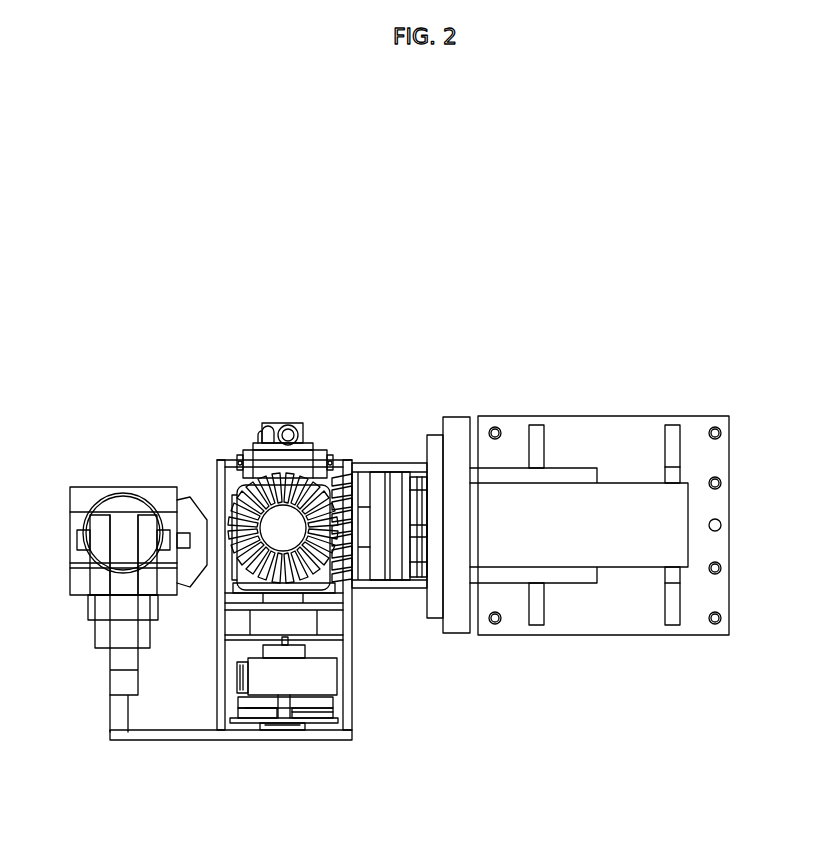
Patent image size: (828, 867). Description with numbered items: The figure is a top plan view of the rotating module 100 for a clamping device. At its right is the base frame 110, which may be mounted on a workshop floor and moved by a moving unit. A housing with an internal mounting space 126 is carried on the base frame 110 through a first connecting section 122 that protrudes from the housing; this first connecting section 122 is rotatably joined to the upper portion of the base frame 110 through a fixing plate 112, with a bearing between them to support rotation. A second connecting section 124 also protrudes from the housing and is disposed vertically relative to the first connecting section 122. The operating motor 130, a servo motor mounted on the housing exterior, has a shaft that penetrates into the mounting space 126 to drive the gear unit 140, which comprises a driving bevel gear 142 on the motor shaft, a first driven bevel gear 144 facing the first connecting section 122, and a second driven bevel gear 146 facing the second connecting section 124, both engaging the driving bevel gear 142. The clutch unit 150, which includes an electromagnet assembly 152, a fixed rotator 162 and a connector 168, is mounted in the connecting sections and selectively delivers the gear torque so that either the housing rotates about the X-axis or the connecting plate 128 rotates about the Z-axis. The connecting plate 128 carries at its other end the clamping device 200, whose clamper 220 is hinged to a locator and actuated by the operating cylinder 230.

The rotating module 100 is at (399, 247).
The base frame 110 is at (458, 430).
The fixing plate 112 is at (436, 605).
The first connecting section 122 is at (378, 470).
The second connecting section 124 is at (347, 703).
The mounting space 126 is at (222, 600).
The connecting plate 128 is at (173, 740).
The operating motor 130 is at (330, 517).
The gear unit 140 is at (278, 353).
The driving bevel gear 142 is at (275, 520).
The first driven bevel gear 144 is at (303, 452).
The second driven bevel gear 146 is at (255, 550).
The clutch unit 150 is at (233, 676).
The electromagnet assembly 152 is at (398, 485).
The fixed rotator 162 is at (295, 730).
The connector 168 is at (307, 708).
The clamping device 200 is at (70, 586).
The clamper 220 is at (123, 545).
The operating cylinder 230 is at (100, 487).